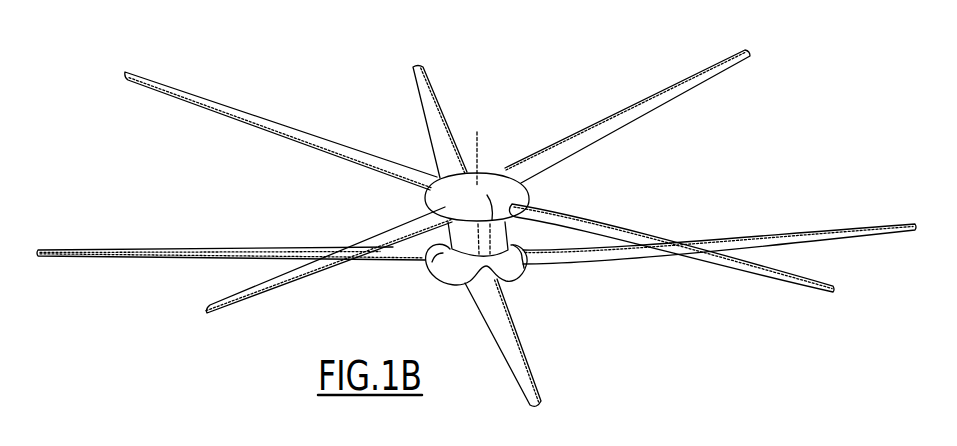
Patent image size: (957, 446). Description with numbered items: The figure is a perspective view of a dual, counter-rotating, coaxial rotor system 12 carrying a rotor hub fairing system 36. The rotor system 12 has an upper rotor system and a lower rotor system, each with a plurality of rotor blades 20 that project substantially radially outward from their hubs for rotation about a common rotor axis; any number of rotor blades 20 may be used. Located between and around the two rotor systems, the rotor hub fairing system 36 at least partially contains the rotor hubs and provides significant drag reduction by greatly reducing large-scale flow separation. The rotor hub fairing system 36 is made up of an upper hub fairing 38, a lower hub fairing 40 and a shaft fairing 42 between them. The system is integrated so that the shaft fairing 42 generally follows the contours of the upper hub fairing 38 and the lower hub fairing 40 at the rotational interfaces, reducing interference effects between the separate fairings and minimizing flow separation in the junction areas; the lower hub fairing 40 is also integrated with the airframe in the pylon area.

The counter-rotating coaxial rotor system 12 is at (340, 70).
The rotor blades 20 is at (619, 118).
The rotor hub fairing system 36 is at (388, 207).
The upper hub fairing 38 is at (497, 171).
The lower hub fairing 40 is at (443, 281).
The shaft fairing 42 is at (522, 257).